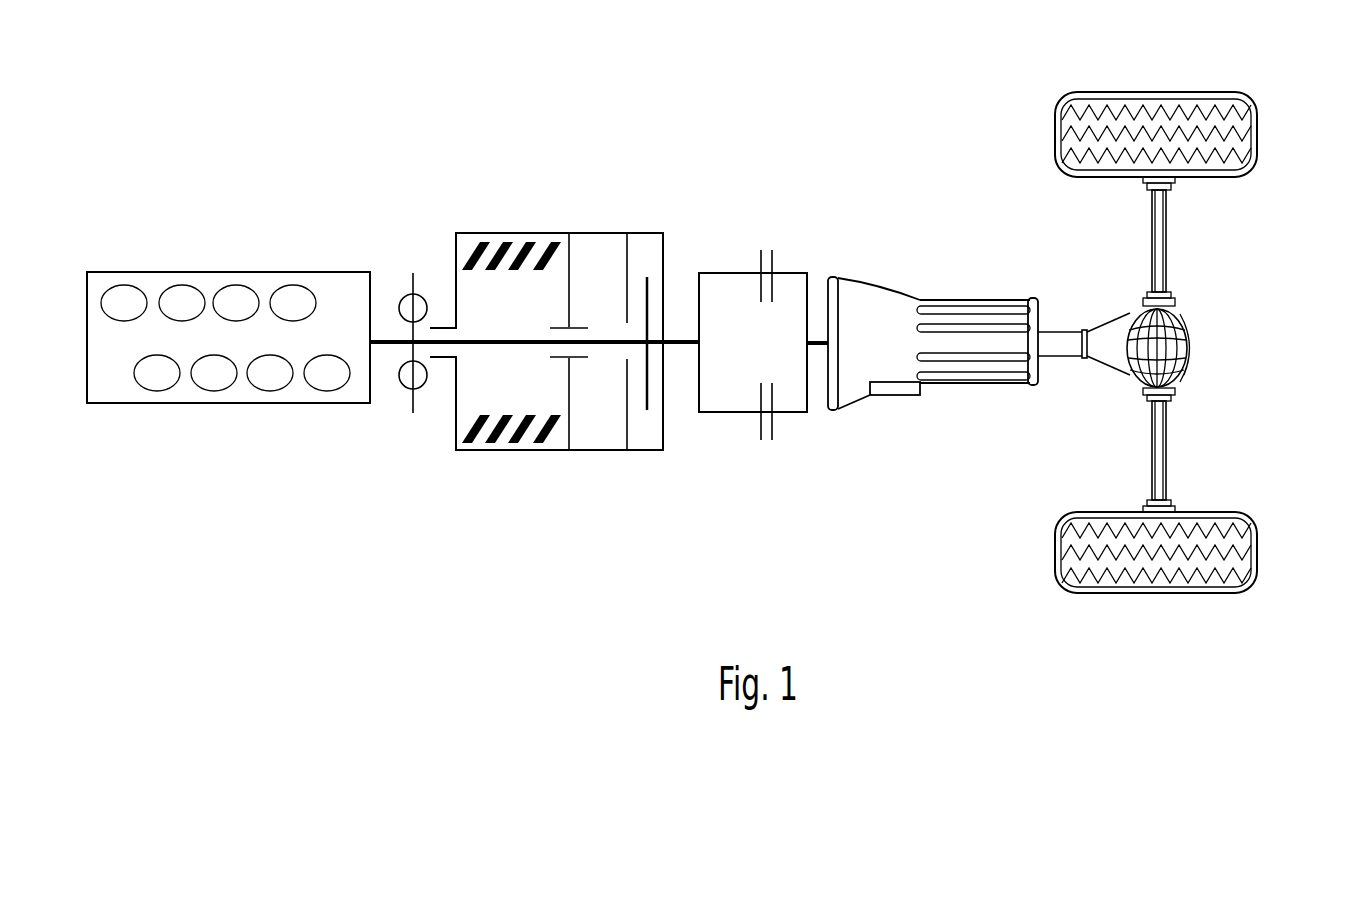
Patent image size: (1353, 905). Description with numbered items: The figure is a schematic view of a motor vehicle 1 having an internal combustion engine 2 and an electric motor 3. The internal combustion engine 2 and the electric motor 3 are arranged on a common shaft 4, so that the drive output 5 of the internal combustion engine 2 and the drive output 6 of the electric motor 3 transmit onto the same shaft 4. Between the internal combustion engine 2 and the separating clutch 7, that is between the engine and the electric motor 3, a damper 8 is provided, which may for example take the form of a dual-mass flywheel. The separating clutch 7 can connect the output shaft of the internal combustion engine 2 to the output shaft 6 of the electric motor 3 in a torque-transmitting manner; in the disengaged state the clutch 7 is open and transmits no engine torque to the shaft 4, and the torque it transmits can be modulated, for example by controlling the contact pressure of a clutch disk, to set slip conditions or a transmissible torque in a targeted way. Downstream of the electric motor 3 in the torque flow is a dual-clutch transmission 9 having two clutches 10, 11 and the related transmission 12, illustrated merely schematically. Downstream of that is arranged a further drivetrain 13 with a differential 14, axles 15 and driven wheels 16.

The motor vehicle 1 is at (876, 147).
The internal combustion engine 2 is at (210, 285).
The electric motor 3 is at (520, 280).
The common shaft 4 is at (688, 343).
The drive output of the internal combustion engine 5 is at (393, 342).
The drive output of the electric motor 6 is at (653, 262).
The separating clutch 7 is at (648, 428).
The damper 8 is at (413, 398).
The dual-clutch transmission 9 is at (941, 427).
The first clutch 10 is at (766, 274).
The second clutch 11 is at (765, 423).
The transmission 12 is at (897, 330).
The further drivetrain 13 is at (1234, 261).
The differential 14 is at (1157, 350).
The axles 15 is at (1160, 222).
The driven wheels 16 is at (1199, 120).